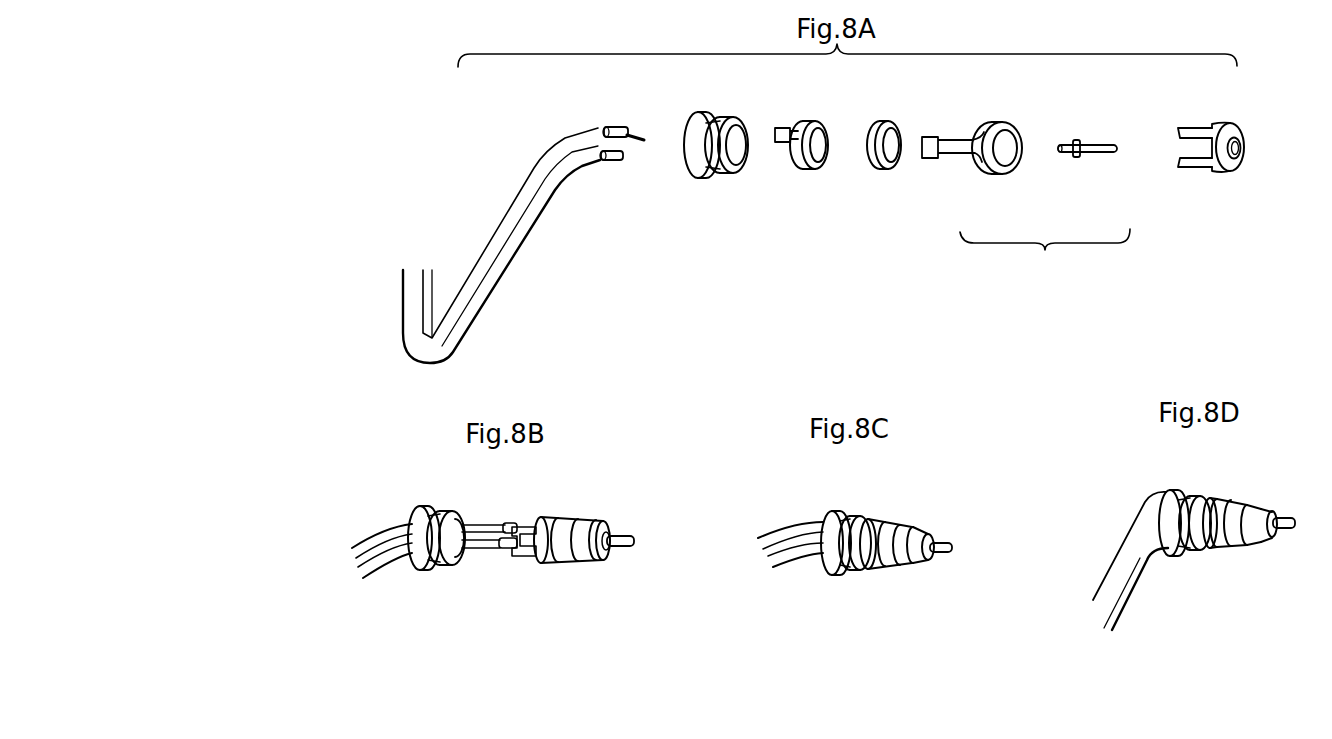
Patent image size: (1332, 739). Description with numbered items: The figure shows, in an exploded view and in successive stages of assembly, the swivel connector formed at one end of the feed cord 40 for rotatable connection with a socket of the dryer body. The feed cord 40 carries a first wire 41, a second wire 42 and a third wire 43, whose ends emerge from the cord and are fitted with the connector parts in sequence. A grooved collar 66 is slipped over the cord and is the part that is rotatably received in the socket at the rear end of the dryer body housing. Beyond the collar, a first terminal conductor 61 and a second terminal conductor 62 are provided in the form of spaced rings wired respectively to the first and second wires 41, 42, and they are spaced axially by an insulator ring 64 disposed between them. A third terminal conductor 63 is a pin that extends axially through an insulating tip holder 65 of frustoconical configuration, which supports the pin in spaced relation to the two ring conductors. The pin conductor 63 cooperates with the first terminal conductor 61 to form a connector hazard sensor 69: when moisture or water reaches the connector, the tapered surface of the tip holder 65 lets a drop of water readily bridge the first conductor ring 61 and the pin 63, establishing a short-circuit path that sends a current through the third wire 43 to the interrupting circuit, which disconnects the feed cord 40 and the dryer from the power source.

In FIG. 8A, the feed cord 40 is at (497, 270).
In FIG. 8D, the feed cord 40 is at (1108, 580).
In FIG. 8A, the first wire 41 is at (617, 127).
In FIG. 8B, the first wire 41 is at (390, 528).
In FIG. 8C, the first wire 41 is at (797, 528).
In FIG. 8A, the second wire 42 is at (613, 161).
In FIG. 8B, the second wire 42 is at (392, 549).
In FIG. 8C, the second wire 42 is at (798, 551).
In FIG. 8A, the third wire 43 is at (636, 135).
In FIG. 8A, the first terminal conductor 61 is at (992, 173).
In FIG. 8B, the first terminal conductor 61 is at (580, 564).
In FIG. 8C, the first terminal conductor 61 is at (897, 572).
In FIG. 8D, the first terminal conductor 61 is at (1240, 549).
In FIG. 8A, the second terminal conductor 62 is at (798, 163).
In FIG. 8B, the second terminal conductor 62 is at (545, 562).
In FIG. 8C, the second terminal conductor 62 is at (868, 520).
In FIG. 8D, the second terminal conductor 62 is at (1203, 533).
In FIG. 8A, the third terminal conductor 63 is at (1105, 154).
In FIG. 8B, the third terminal conductor 63 is at (631, 543).
In FIG. 8C, the third terminal conductor 63 is at (942, 543).
In FIG. 8D, the third terminal conductor 63 is at (1283, 518).
In FIG. 8A, the insulator ring 64 is at (873, 161).
In FIG. 8D, the insulator ring 64 is at (1223, 508).
In FIG. 8A, the insulating tip holder 65 is at (1220, 171).
In FIG. 8B, the insulating tip holder 65 is at (607, 565).
In FIG. 8C, the insulating tip holder 65 is at (918, 569).
In FIG. 8D, the insulating tip holder 65 is at (1263, 542).
In FIG. 8A, the grooved collar 66 is at (713, 130).
In FIG. 8B, the grooved collar 66 is at (435, 510).
In FIG. 8C, the grooved collar 66 is at (840, 517).
In FIG. 8D, the grooved collar 66 is at (1183, 508).
In FIG. 8A, the connector hazard sensor 69 is at (1045, 253).